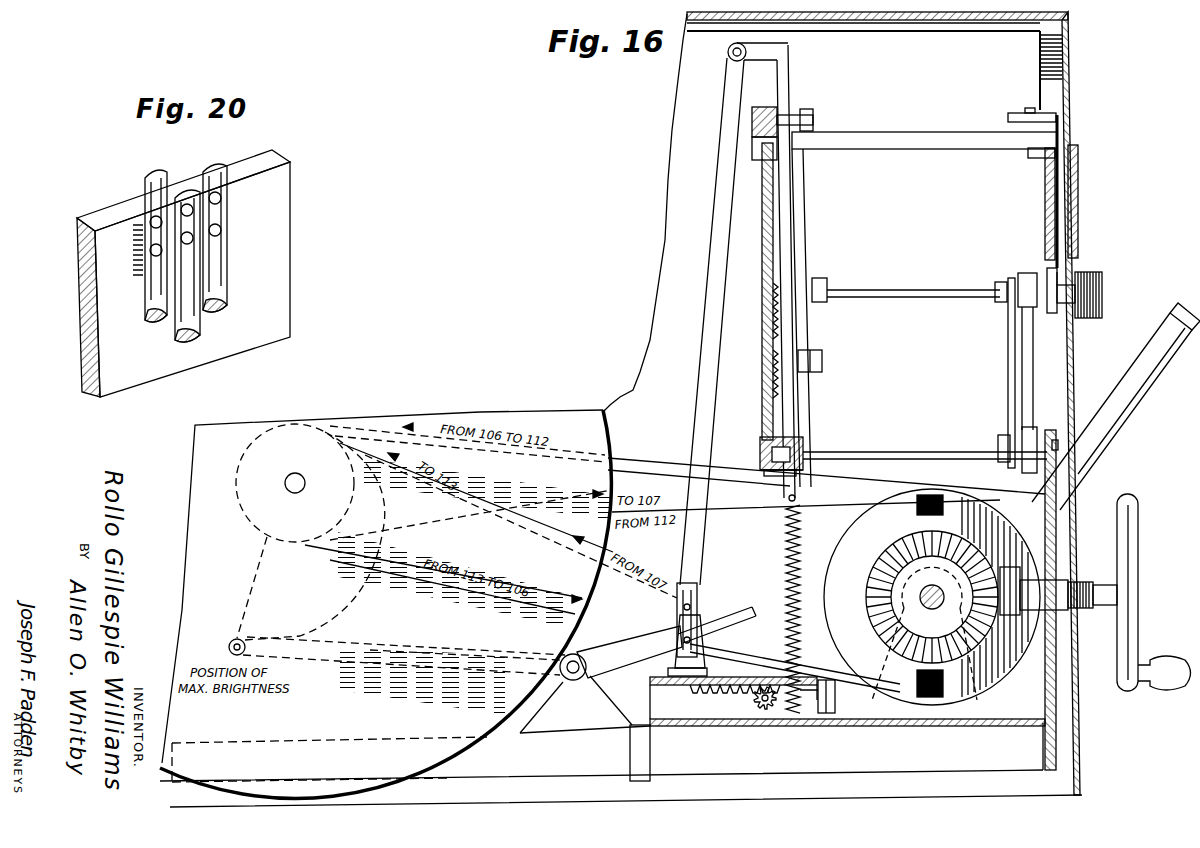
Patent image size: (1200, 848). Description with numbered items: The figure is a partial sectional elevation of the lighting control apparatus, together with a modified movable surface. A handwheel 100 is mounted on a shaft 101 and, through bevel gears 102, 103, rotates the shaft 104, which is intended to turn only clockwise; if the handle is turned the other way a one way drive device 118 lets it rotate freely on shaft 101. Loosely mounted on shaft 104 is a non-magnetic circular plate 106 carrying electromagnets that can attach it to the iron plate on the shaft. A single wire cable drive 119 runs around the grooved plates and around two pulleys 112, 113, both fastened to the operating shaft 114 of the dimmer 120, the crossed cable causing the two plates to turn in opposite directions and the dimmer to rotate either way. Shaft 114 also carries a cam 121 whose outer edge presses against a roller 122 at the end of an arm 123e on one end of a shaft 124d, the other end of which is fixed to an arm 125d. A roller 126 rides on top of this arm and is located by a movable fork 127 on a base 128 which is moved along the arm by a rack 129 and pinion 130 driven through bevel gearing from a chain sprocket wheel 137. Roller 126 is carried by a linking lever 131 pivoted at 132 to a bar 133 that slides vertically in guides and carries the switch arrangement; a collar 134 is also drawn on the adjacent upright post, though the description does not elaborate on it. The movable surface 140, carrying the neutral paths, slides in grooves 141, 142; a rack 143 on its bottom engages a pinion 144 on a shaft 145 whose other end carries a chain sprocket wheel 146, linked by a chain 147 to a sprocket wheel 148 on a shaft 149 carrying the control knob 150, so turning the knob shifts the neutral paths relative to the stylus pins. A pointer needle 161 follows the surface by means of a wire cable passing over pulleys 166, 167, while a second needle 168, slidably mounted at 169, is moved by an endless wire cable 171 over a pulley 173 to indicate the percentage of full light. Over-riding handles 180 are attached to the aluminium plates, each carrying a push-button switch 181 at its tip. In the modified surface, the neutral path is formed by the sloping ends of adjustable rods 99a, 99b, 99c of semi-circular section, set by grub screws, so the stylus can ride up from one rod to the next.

In FIG. 20, the adjustable rod 99a is at (147, 180).
In FIG. 20, the adjustable rod 99b is at (186, 190).
In FIG. 20, the adjustable rod 99c is at (218, 168).
In FIG. 16, the handwheel 100 is at (1139, 637).
In FIG. 16, the shaft 101 is at (1030, 607).
In FIG. 16, the bevel gear 102 is at (1000, 577).
In FIG. 16, the bevel gear 103 is at (880, 553).
In FIG. 16, the shaft 104 is at (925, 605).
In FIG. 16, the circular plate 106 is at (980, 502).
In FIG. 16, the pulley 112 is at (274, 434).
In FIG. 16, the pulley 113 is at (305, 468).
In FIG. 16, the operating shaft 114 is at (290, 490).
In FIG. 16, the one way drive device 118 is at (1080, 580).
In FIG. 16, the wire cable drive 119 is at (640, 460).
In FIG. 16, the dimmer 120 is at (440, 752).
In FIG. 16, the cam 121 is at (247, 585).
In FIG. 16, the roller 122 is at (230, 648).
In FIG. 16, the arm 123e is at (407, 652).
In FIG. 16, the shaft 124d is at (573, 681).
In FIG. 16, the arm 125d is at (622, 645).
In FIG. 16, the roller 126 is at (700, 597).
In FIG. 16, the movable fork 127 is at (680, 652).
In FIG. 16, the base 128 is at (748, 634).
In FIG. 16, the rack 129 is at (700, 690).
In FIG. 16, the pinion 130 is at (758, 703).
In FIG. 16, the linking lever 131 is at (702, 333).
In FIG. 16, the pivot 132 is at (728, 55).
In FIG. 16, the bar 133 is at (789, 75).
In FIG. 16, the collar 134 is at (822, 360).
In FIG. 16, the chain sprocket wheel 137 is at (827, 723).
In FIG. 16, the movable surface 140 is at (767, 258).
In FIG. 16, the groove 141 is at (752, 133).
In FIG. 16, the groove 142 is at (762, 440).
In FIG. 16, the rack 143 is at (762, 463).
In FIG. 16, the pinion 144 is at (768, 476).
In FIG. 16, the shaft 145 is at (870, 452).
In FIG. 16, the chain sprocket wheel 146 is at (1033, 430).
In FIG. 16, the chain 147 is at (1030, 355).
In FIG. 16, the chain sprocket wheel 148 is at (1020, 273).
In FIG. 16, the shaft 149 is at (890, 292).
In FIG. 16, the control knob 150 is at (1102, 292).
In FIG. 16, the pointer needle 161 is at (1059, 135).
In FIG. 16, the pulley 166 is at (815, 118).
In FIG. 16, the pulley 167 is at (1012, 112).
In FIG. 16, the needle 168 is at (1079, 232).
In FIG. 16, the slidable mounting 169 is at (1043, 257).
In FIG. 16, the endless wire cable 171 is at (1058, 277).
In FIG. 16, the pulley 173 is at (1053, 316).
In FIG. 16, the handle 180 is at (1112, 411).
In FIG. 16, the push-button switch 181 is at (1176, 315).